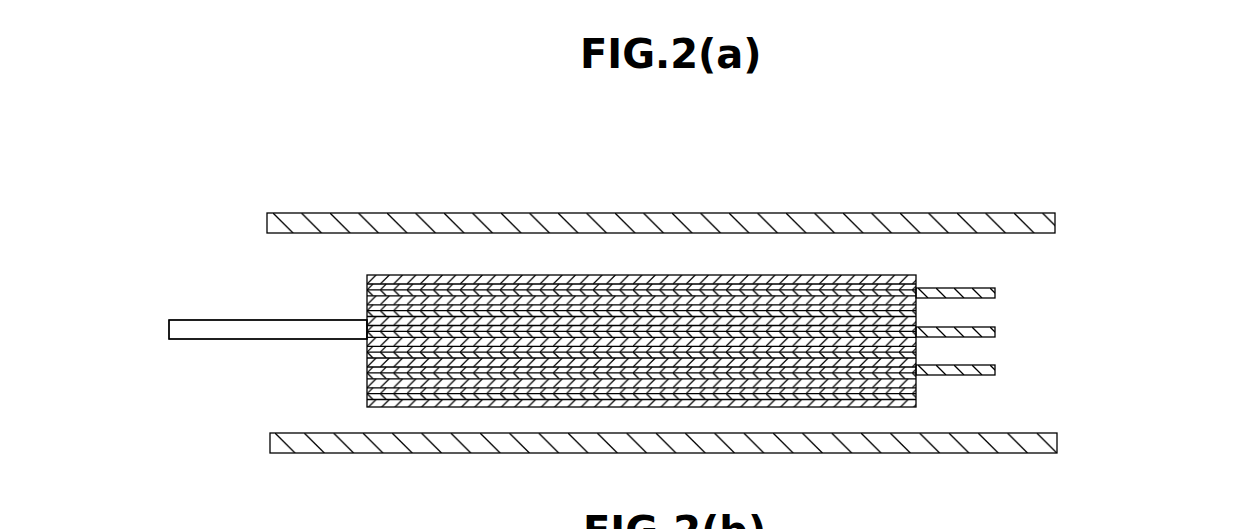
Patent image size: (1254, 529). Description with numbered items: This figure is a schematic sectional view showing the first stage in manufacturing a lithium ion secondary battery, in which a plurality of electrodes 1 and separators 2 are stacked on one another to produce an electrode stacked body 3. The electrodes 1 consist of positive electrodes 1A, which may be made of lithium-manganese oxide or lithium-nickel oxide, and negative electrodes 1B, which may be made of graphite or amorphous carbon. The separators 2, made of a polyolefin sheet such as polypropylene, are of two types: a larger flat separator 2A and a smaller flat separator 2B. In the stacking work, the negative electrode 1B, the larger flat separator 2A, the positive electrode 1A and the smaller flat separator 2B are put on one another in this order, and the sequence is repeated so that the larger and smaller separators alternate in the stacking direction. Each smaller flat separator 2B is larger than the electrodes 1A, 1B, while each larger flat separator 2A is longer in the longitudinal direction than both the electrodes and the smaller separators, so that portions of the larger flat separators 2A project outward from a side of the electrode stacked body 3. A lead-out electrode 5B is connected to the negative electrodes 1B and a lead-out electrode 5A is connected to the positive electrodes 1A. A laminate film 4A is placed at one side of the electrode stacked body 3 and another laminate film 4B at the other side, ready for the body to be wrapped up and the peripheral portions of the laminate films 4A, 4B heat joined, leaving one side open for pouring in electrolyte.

The electrodes 1 is at (362, 140).
The positive electrode 1A is at (618, 378).
The negative electrode 1B is at (657, 400).
The separators 2 is at (1063, 140).
The larger flat separator 2A is at (878, 370).
The smaller flat separator 2B is at (897, 390).
The electrode stacked body 3 is at (1063, 318).
The laminate film 4A is at (315, 212).
The laminate film 4B is at (317, 453).
The lead-out electrode 5A is at (195, 329).
The lead-out electrode 5B is at (195, 329).